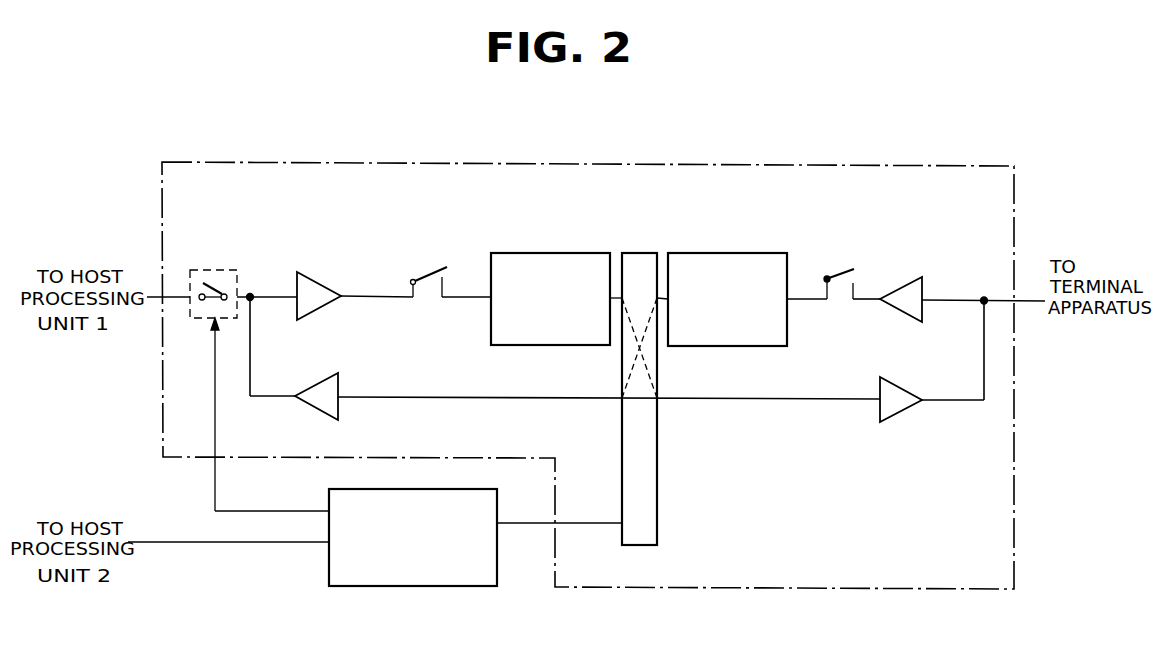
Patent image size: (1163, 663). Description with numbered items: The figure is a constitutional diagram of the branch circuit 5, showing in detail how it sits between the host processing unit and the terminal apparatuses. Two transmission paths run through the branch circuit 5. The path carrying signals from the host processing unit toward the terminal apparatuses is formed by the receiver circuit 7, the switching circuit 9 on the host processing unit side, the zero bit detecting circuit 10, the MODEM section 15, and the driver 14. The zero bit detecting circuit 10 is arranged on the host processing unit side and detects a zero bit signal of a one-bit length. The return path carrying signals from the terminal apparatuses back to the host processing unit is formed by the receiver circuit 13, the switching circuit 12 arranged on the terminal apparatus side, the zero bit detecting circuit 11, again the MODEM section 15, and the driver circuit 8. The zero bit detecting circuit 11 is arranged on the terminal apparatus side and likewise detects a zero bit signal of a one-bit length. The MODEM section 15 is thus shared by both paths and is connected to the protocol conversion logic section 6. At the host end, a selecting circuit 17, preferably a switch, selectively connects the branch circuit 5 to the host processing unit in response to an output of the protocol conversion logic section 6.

The branch circuit 5 is at (915, 166).
The protocol conversion logic section 6 is at (437, 586).
The receiver circuit 7 is at (317, 279).
The driver circuit 8 is at (338, 378).
The switching circuit 9 is at (443, 275).
The "0" bit detecting circuit 10 is at (566, 253).
The "0" bit detecting circuit 11 is at (760, 253).
The switching circuit 12 is at (855, 278).
The receiver circuit 13 is at (922, 285).
The driver 14 is at (880, 413).
The MODEM section 15 is at (640, 253).
The selecting circuit 17 is at (212, 270).